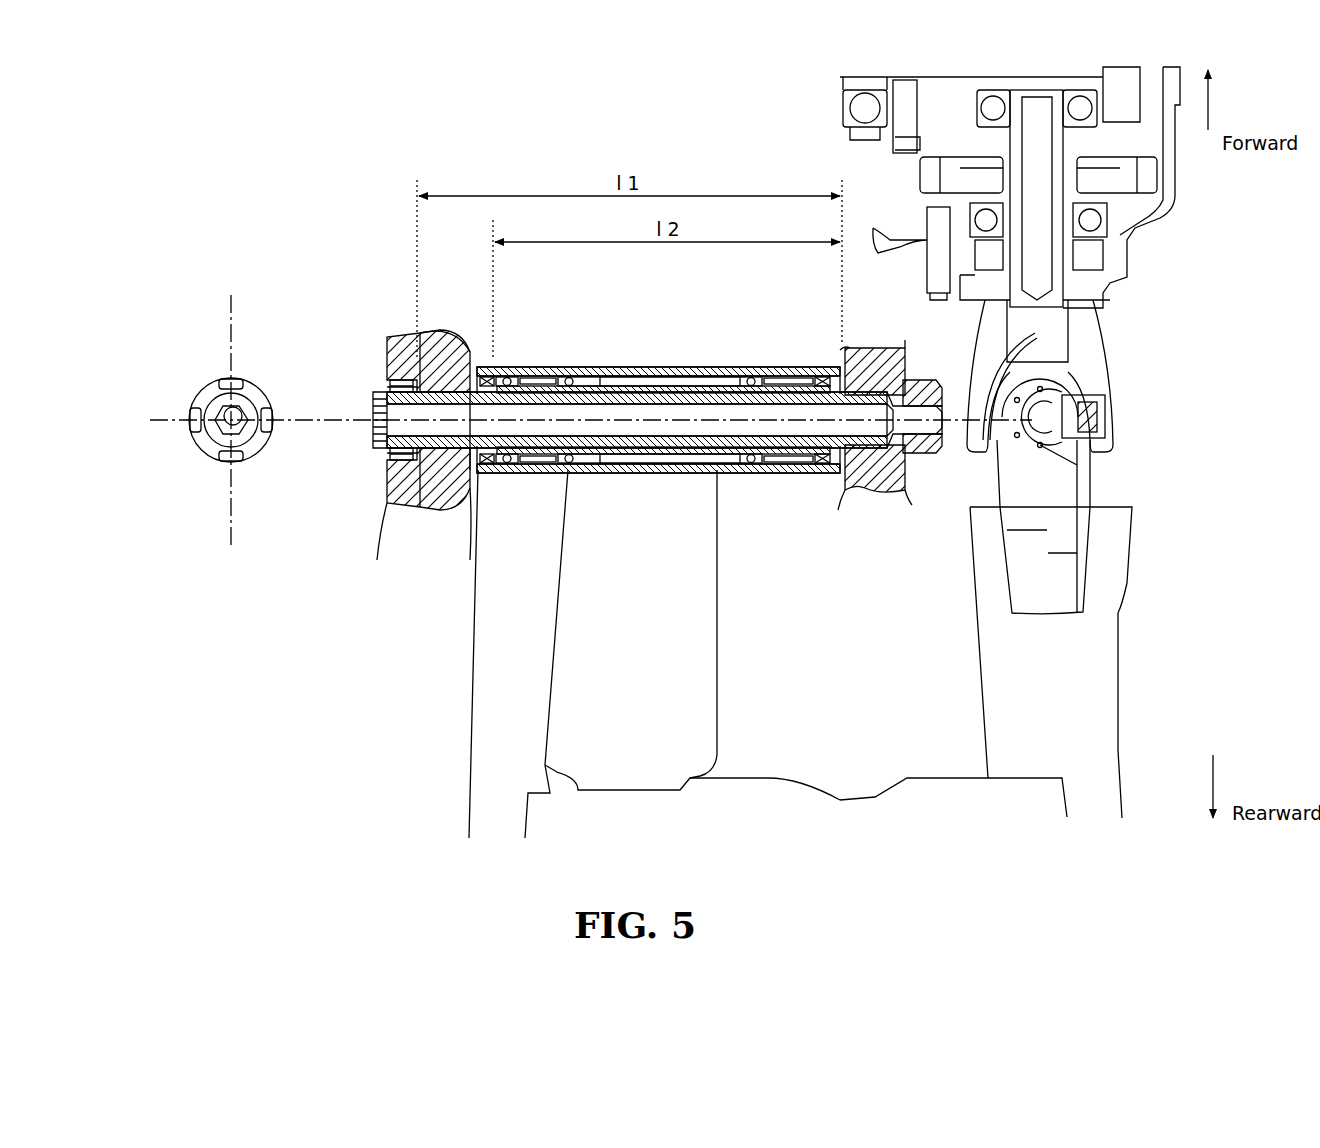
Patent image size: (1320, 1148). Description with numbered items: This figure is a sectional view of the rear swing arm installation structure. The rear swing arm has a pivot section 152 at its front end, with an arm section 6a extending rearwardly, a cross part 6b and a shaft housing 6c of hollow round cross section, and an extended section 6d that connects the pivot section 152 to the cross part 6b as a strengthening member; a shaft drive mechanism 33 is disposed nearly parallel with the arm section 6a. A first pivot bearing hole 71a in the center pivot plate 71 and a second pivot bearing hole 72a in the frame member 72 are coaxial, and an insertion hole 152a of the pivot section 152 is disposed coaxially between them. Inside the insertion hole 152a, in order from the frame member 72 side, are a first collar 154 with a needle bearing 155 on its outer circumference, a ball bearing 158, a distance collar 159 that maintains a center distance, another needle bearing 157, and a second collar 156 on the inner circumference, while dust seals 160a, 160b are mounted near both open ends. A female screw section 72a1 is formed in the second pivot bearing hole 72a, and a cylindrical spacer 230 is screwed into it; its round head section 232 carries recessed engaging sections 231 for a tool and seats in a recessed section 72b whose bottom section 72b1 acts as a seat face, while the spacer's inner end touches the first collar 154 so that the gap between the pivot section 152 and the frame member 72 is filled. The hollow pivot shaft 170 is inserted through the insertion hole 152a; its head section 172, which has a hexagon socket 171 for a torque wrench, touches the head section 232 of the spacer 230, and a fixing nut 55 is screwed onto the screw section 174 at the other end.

The arm section 6a is at (505, 742).
The cross part 6b is at (853, 828).
The shaft housing 6c is at (1090, 765).
The extended section 6d is at (613, 693).
The shaft drive mechanism 33 is at (1070, 670).
The fixing nut 55 is at (925, 382).
The center pivot plate 71 is at (902, 355).
The first pivot bearing hole 71a is at (866, 493).
The frame member 72 is at (410, 343).
The second pivot bearing hole 72a is at (470, 352).
The female screw section 72a1 is at (478, 472).
The recessed section 72b is at (398, 503).
The bottom section 72b1 is at (443, 500).
The pivot section 152 is at (768, 366).
The insertion hole 152a is at (702, 385).
The first collar 154 is at (506, 378).
The needle bearing 155 is at (540, 380).
The second collar 156 is at (798, 476).
The needle bearing 157 is at (770, 474).
The ball bearing 158 is at (584, 385).
The distance collar 159 is at (656, 385).
The dust seal 160a is at (497, 472).
The dust seal 160b is at (822, 476).
The pivot shaft 170 is at (226, 464).
The hexagon socket 171 is at (240, 410).
The head section 172 is at (212, 430).
The screw section 174 is at (930, 458).
The cylindrical spacer 230 is at (203, 394).
The engaging sections 231 is at (230, 378).
The head section 232 is at (425, 340).